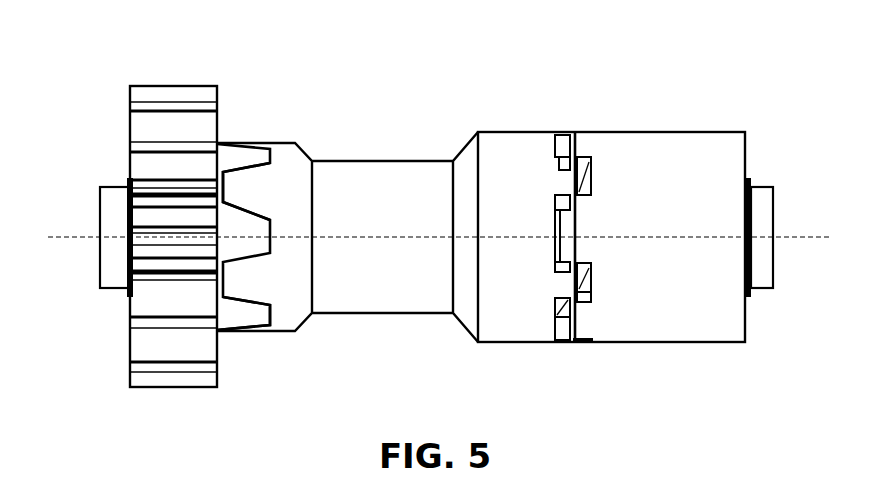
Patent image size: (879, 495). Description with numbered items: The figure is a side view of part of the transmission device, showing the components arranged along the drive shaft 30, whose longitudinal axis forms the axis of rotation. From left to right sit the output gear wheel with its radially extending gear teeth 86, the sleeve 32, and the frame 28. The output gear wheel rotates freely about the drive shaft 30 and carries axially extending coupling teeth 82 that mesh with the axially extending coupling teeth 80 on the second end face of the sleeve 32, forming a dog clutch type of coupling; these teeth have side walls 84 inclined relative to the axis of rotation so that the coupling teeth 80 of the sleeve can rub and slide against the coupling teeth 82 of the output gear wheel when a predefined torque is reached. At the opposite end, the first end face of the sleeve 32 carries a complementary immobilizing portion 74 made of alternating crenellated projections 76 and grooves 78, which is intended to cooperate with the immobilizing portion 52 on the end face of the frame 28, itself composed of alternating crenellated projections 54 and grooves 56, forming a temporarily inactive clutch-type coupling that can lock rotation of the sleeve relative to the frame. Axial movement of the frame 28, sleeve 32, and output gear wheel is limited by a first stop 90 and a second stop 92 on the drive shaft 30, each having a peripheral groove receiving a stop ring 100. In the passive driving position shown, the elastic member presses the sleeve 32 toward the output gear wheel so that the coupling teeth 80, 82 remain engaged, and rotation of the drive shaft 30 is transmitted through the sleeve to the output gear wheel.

The frame 28 is at (698, 165).
The drive shaft 30 is at (765, 183).
The sleeve 32 is at (375, 188).
The immobilizing portion 52 is at (585, 130).
The projections 54 is at (582, 192).
The grooves 56 is at (593, 297).
The complementary immobilizing portion 74 is at (553, 130).
The projections 76 is at (560, 188).
The grooves 78 is at (555, 318).
The coupling teeth 80 is at (233, 185).
The coupling teeth 82 is at (240, 312).
The side walls 84 is at (252, 207).
The gear teeth 86 is at (153, 86).
The first stop 90 is at (124, 177).
The second stop 92 is at (753, 311).
The stop ring 100 is at (127, 292).